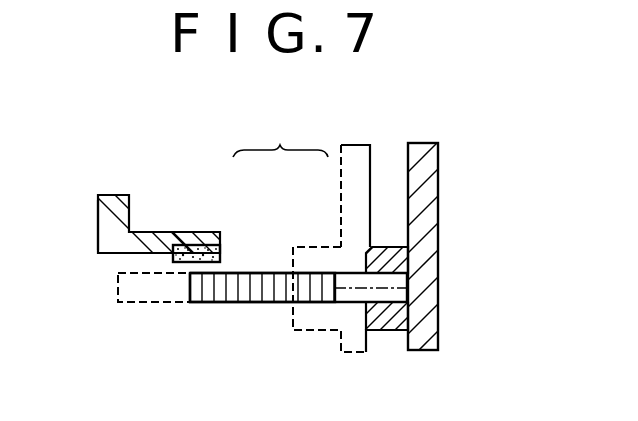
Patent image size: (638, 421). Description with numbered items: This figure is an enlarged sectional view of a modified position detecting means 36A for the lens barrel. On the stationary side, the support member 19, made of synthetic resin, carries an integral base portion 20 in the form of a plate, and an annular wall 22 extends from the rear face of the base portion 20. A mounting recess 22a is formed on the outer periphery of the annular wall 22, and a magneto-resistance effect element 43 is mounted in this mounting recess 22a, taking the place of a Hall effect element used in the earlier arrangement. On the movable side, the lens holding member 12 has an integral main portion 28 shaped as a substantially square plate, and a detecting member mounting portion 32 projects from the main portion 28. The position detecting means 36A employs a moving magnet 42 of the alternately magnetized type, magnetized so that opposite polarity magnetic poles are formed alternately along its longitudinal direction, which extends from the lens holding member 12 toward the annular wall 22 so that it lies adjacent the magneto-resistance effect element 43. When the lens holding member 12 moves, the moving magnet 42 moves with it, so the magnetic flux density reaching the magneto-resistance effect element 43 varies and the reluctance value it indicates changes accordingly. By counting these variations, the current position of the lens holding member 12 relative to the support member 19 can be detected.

The lens holding member 12 is at (371, 158).
The support member 19 is at (104, 223).
The base portion 20 is at (115, 195).
The annular wall 22 is at (155, 232).
The mounting recess 22a is at (183, 247).
The main portion 28 is at (432, 154).
The detecting member mounting portion 32 is at (388, 318).
The position detecting means 36A is at (280, 139).
The moving magnet 42 is at (253, 272).
The magneto-resistance effect element 43 is at (222, 250).